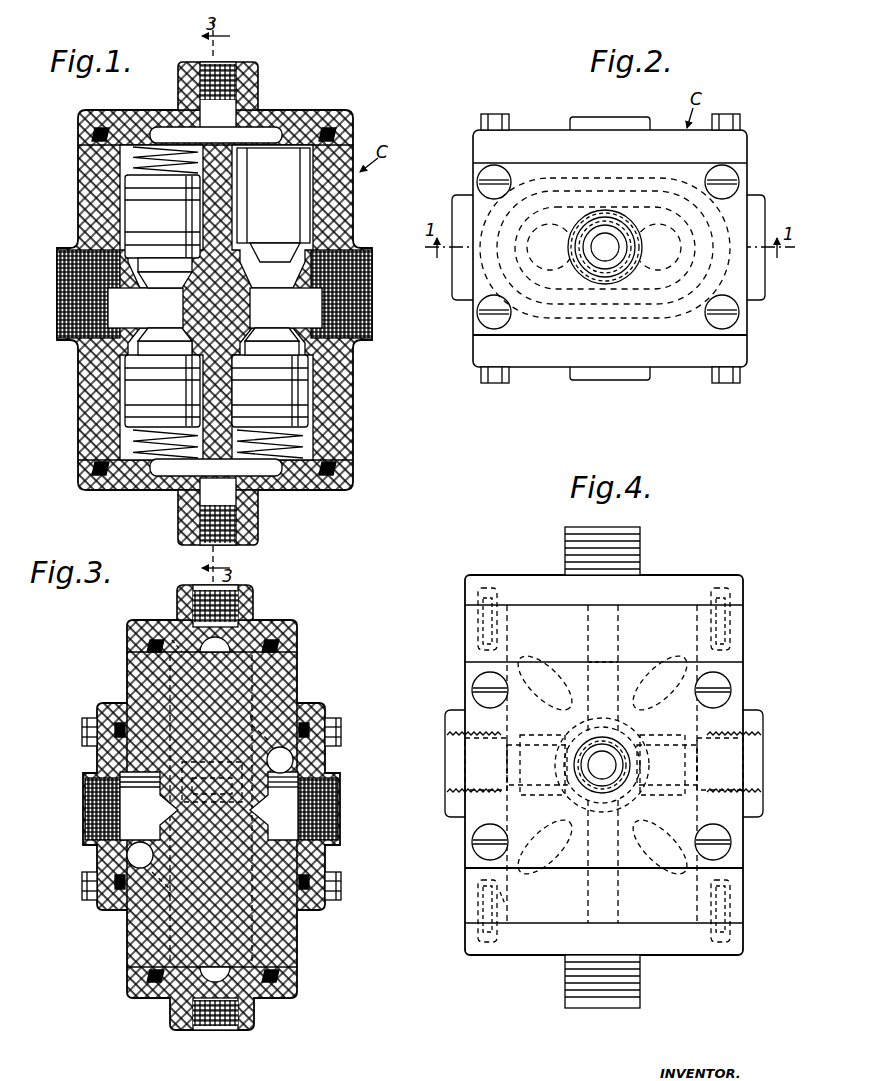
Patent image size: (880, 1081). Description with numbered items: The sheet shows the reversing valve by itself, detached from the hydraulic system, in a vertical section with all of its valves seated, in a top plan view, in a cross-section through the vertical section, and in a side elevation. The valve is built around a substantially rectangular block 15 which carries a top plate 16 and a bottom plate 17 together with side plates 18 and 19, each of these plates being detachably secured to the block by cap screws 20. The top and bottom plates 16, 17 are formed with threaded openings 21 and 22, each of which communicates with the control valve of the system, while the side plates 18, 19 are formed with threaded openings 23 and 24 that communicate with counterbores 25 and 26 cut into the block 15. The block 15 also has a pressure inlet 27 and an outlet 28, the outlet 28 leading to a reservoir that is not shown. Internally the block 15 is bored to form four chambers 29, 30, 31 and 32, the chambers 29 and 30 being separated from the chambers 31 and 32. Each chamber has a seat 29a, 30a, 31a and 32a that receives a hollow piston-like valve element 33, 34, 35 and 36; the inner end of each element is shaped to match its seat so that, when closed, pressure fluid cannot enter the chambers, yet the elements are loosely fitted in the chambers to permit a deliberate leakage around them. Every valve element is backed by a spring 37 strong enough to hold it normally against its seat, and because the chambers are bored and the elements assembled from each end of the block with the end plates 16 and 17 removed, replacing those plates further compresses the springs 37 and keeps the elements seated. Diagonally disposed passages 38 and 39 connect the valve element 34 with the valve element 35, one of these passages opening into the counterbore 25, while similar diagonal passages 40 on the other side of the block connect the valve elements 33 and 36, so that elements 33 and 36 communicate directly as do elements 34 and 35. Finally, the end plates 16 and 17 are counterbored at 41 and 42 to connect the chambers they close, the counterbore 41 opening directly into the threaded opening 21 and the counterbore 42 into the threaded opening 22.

In FIG. 1, the block 15 is at (345, 205).
In FIG. 3, the block 15 is at (278, 675).
In FIG. 4, the block 15 is at (604, 765).
In FIG. 1, the top plate 16 is at (312, 128).
In FIG. 2, the top plate 16 is at (737, 210).
In FIG. 3, the top plate 16 is at (212, 644).
In FIG. 4, the top plate 16 is at (520, 583).
In FIG. 1, the bottom plate 17 is at (163, 488).
In FIG. 3, the bottom plate 17 is at (295, 984).
In FIG. 4, the bottom plate 17 is at (528, 945).
In FIG. 2, the side plate 18 is at (529, 138).
In FIG. 3, the side plate 18 is at (108, 702).
In FIG. 4, the side plate 18 is at (477, 710).
In FIG. 2, the side plate 19 is at (548, 358).
In FIG. 3, the side plate 19 is at (325, 714).
In FIG. 2, the cap screws 20 is at (490, 112).
In FIG. 3, the cap screws 20 is at (347, 738).
In FIG. 4, the cap screws 20 is at (719, 706).
In FIG. 1, the threaded opening 21 is at (222, 92).
In FIG. 2, the threaded opening 21 is at (615, 253).
In FIG. 3, the threaded opening 21 is at (247, 603).
In FIG. 1, the threaded opening 22 is at (215, 510).
In FIG. 3, the threaded opening 22 is at (214, 1012).
In FIG. 3, the threaded opening 23 is at (90, 803).
In FIG. 4, the threaded opening 23 is at (608, 767).
In FIG. 3, the threaded opening 24 is at (328, 812).
In FIG. 3, the counterbore 25 is at (128, 776).
In FIG. 3, the counterbore 26 is at (337, 777).
In FIG. 1, the pressure inlet 27 is at (70, 300).
In FIG. 4, the pressure inlet 27 is at (462, 757).
In FIG. 1, the outlet 28 is at (350, 320).
In FIG. 4, the outlet 28 is at (748, 758).
In FIG. 1, the chamber 29 is at (125, 208).
In FIG. 2, the chamber 29 is at (571, 208).
In FIG. 4, the chamber 29 is at (586, 633).
In FIG. 1, the seat 29a is at (132, 262).
In FIG. 1, the chamber 30 is at (127, 407).
In FIG. 4, the chamber 30 is at (500, 898).
In FIG. 1, the seat 30a is at (145, 352).
In FIG. 1, the chamber 31 is at (318, 220).
In FIG. 2, the chamber 31 is at (650, 206).
In FIG. 4, the chamber 31 is at (621, 633).
In FIG. 1, the seat 31a is at (312, 262).
In FIG. 1, the chamber 32 is at (312, 393).
In FIG. 4, the chamber 32 is at (700, 877).
In FIG. 1, the seat 32a is at (290, 332).
In FIG. 1, the valve element 33 is at (122, 193).
In FIG. 3, the valve element 33 is at (173, 643).
In FIG. 1, the valve element 34 is at (130, 425).
In FIG. 3, the valve element 34 is at (167, 940).
In FIG. 1, the valve element 35 is at (348, 125).
In FIG. 1, the valve element 36 is at (300, 366).
In FIG. 1, the spring 37 is at (284, 160).
In FIG. 3, the diagonal passage 38 is at (147, 887).
In FIG. 4, the diagonal passage 38 is at (551, 874).
In FIG. 4, the diagonal passage 39 is at (658, 656).
In FIG. 3, the diagonal passages 40 is at (272, 722).
In FIG. 4, the diagonal passages 40 is at (551, 656).
In FIG. 1, the counterbore 41 is at (165, 128).
In FIG. 2, the counterbore 41 is at (548, 226).
In FIG. 1, the counterbore 42 is at (178, 472).